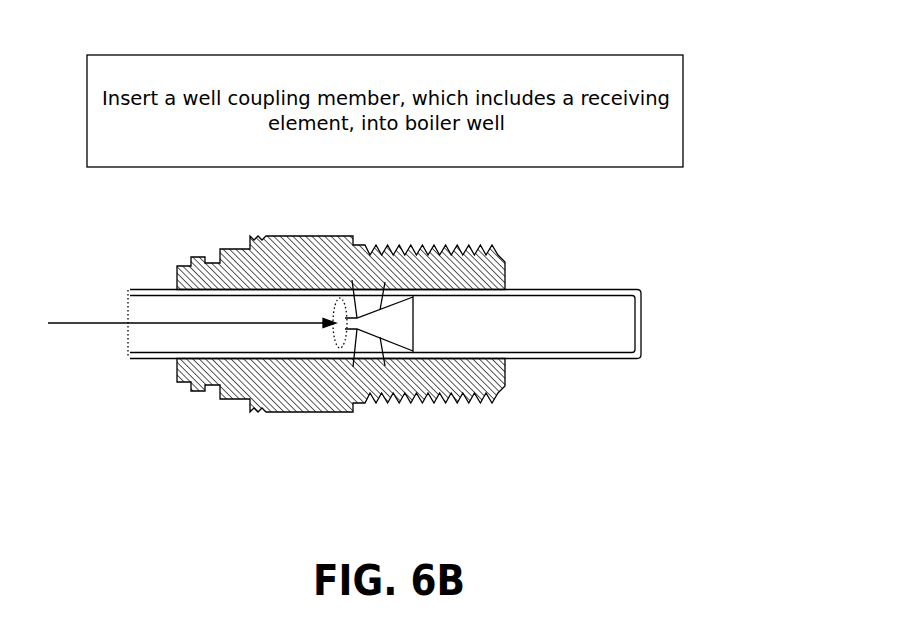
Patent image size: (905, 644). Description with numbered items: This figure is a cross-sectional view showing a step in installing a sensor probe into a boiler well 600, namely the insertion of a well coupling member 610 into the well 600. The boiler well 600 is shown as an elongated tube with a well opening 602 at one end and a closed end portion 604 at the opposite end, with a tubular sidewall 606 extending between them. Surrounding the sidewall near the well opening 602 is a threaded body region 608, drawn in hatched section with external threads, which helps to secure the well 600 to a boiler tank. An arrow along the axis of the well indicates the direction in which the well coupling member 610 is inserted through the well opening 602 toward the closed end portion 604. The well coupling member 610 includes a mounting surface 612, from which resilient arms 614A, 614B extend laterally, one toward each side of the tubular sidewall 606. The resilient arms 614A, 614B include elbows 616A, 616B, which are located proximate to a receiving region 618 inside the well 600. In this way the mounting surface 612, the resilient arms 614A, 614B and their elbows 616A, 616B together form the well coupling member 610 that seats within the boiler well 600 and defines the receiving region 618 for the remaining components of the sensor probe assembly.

The boiler well 600 is at (405, 488).
The well opening 602 is at (128, 308).
The closed end portion 604 is at (650, 331).
The tubular sidewall 606 is at (527, 289).
The threaded body region 608 is at (385, 282).
The well coupling member 610 is at (421, 309).
The mounting surface 612 is at (413, 325).
The resilient arm 614A is at (387, 280).
The resilient arm 614B is at (386, 367).
The elbow 616A is at (351, 281).
The elbow 616B is at (352, 369).
The receiving region 618 is at (333, 303).